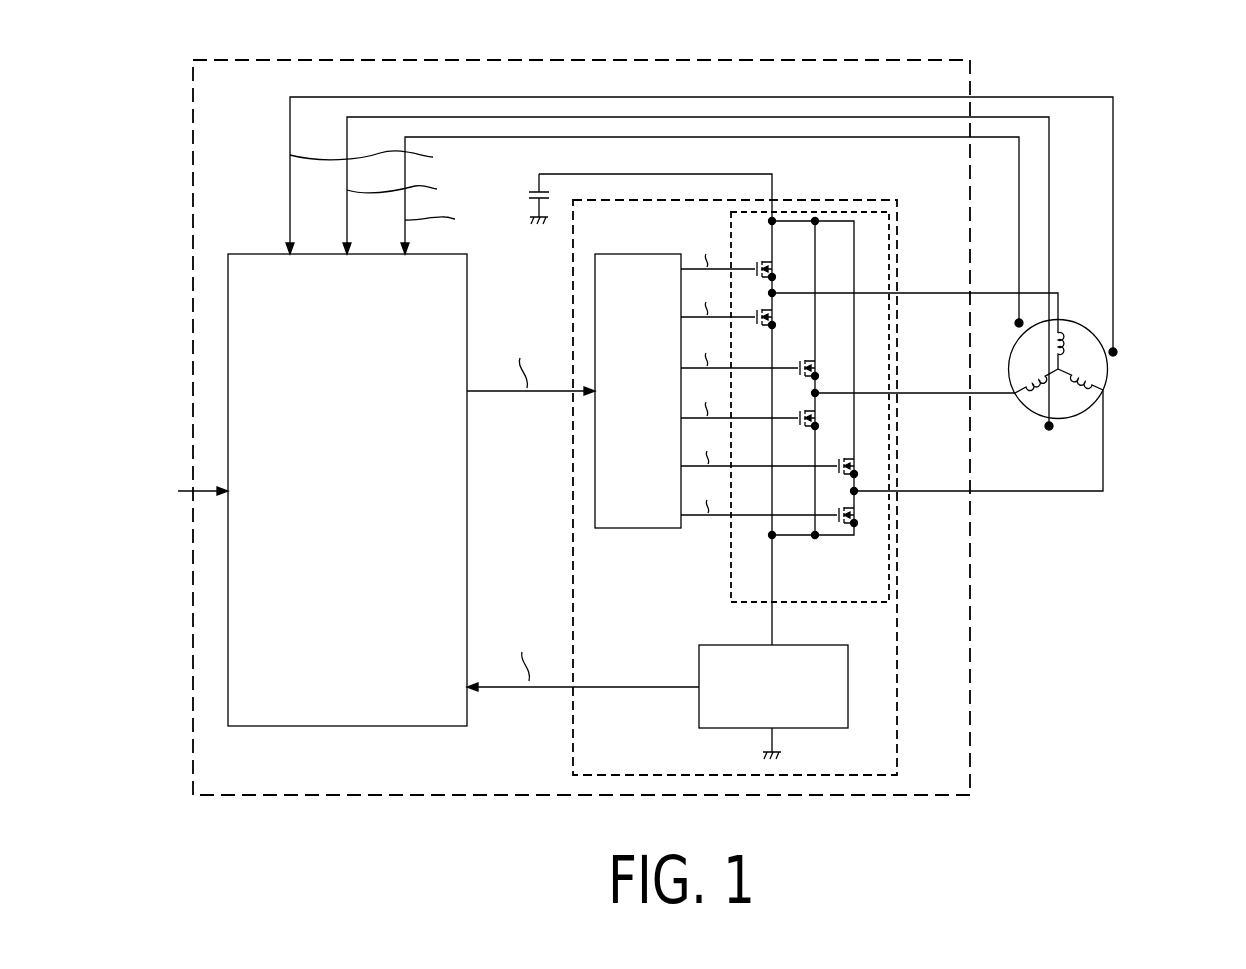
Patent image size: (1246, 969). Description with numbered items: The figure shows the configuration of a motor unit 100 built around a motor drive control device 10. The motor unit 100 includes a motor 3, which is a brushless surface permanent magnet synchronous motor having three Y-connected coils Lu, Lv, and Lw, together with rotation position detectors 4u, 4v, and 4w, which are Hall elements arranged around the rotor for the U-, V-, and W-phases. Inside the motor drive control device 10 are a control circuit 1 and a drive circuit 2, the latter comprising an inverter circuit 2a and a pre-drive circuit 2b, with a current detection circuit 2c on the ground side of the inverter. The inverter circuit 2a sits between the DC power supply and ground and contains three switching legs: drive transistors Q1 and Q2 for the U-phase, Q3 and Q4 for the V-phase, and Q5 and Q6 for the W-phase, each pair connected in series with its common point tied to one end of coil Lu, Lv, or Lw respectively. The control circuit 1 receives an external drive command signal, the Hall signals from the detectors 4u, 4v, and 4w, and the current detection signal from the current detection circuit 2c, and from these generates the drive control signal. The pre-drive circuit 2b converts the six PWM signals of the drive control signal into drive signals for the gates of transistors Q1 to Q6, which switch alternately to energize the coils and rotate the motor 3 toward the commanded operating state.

The motor unit 100 is at (1153, 88).
The motor drive control device 10 is at (866, 60).
The control circuit 1 is at (253, 253).
The drive circuit 2 is at (901, 220).
The inverter circuit 2a is at (843, 211).
The pre-drive circuit 2b is at (636, 253).
The current detection circuit 2c is at (848, 688).
The motor 3 is at (1046, 368).
The rotation position detector 4u is at (1016, 320).
The rotation position detector 4v is at (1048, 431).
The rotation position detector 4w is at (1110, 348).
The coil Lu is at (1052, 346).
The coil Lv is at (1037, 390).
The coil Lw is at (1075, 393).
The drive transistor Q1 is at (728, 259).
The drive transistor Q2 is at (728, 308).
The drive transistor Q3 is at (750, 358).
The drive transistor Q4 is at (750, 407).
The drive transistor Q5 is at (769, 456).
The drive transistor Q6 is at (769, 505).